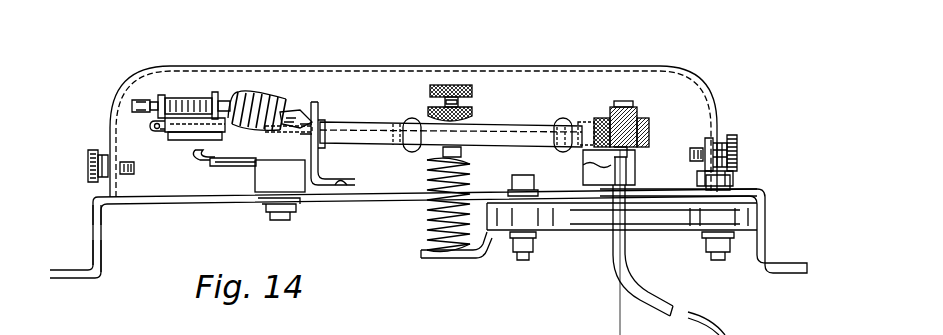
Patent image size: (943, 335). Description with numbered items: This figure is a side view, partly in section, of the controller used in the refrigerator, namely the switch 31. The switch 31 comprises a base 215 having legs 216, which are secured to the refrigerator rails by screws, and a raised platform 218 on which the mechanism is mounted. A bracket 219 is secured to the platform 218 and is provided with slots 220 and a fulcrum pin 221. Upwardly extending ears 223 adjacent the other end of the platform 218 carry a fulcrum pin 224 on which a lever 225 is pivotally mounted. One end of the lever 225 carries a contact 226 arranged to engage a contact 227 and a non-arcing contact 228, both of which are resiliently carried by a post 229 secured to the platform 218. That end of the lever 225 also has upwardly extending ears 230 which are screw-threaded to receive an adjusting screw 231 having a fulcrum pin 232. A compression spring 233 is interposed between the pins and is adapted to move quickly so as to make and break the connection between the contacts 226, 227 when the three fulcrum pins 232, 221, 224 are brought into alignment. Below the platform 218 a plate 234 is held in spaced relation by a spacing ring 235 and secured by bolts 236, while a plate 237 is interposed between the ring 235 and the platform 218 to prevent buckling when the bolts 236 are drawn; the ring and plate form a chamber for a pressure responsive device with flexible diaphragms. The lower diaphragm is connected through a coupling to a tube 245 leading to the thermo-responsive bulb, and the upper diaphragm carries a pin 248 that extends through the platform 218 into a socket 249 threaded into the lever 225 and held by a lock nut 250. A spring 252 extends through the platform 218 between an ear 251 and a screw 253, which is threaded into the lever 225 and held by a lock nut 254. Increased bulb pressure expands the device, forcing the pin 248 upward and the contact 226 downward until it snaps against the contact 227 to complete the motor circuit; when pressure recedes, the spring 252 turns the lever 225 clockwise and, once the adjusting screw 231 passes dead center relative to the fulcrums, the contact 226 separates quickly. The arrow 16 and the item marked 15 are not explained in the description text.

The tube 15 is at (605, 162).
The direction arrow 16 is at (262, 84).
The switch 31 is at (745, 104).
The base 215 is at (93, 200).
The legs 216 is at (100, 250).
The raised platform 218 is at (140, 205).
The bracket 219 is at (320, 168).
The slots 220 is at (310, 132).
The fulcrum pin 221 is at (312, 102).
The upwardly extending ears 223 is at (615, 112).
The fulcrum pin 224 is at (603, 128).
The lever 225 is at (495, 135).
The contact 226 is at (182, 142).
The contact 227 is at (210, 158).
The non-arcing contact 228 is at (205, 168).
The post 229 is at (268, 193).
The upwardly extending ears 230 is at (172, 97).
The adjusting screw 231 is at (147, 102).
The fulcrum pin 232 is at (229, 98).
The compression spring 233 is at (270, 102).
The plate 234 is at (557, 234).
The spacing ring 235 is at (585, 226).
The bolts 236 is at (520, 262).
The plate 237 is at (752, 198).
The tube 245 is at (743, 323).
The pin 248 is at (625, 150).
The socket 249 is at (630, 110).
The lock nut 250 is at (636, 126).
The ear 251 is at (423, 253).
The spring 252 is at (428, 212).
The screw 253 is at (445, 85).
The lock nut 254 is at (430, 112).